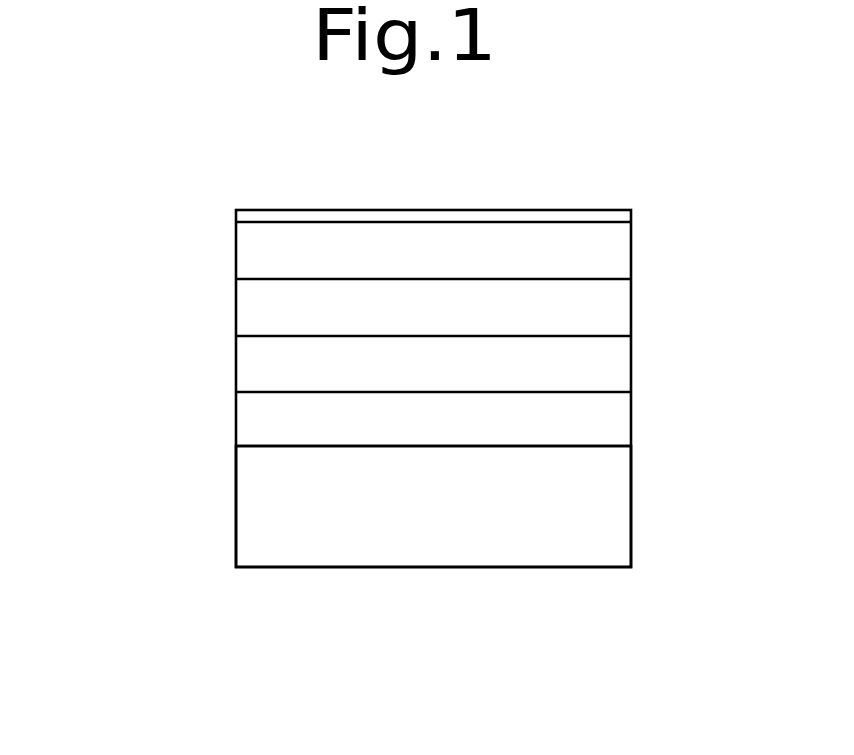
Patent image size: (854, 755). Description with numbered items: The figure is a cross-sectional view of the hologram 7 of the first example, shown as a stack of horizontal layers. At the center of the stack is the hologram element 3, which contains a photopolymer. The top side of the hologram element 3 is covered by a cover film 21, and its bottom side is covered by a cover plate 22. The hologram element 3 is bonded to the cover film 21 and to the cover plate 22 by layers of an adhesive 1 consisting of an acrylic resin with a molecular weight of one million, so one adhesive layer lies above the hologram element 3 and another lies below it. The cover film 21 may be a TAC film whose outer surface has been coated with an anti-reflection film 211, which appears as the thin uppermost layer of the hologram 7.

The hologram 7 is at (180, 508).
The anti-reflection film 211 is at (608, 217).
The cover film 21 is at (607, 257).
The adhesive 1 is at (605, 313).
The hologram element 3 is at (605, 372).
The cover plate 22 is at (608, 522).